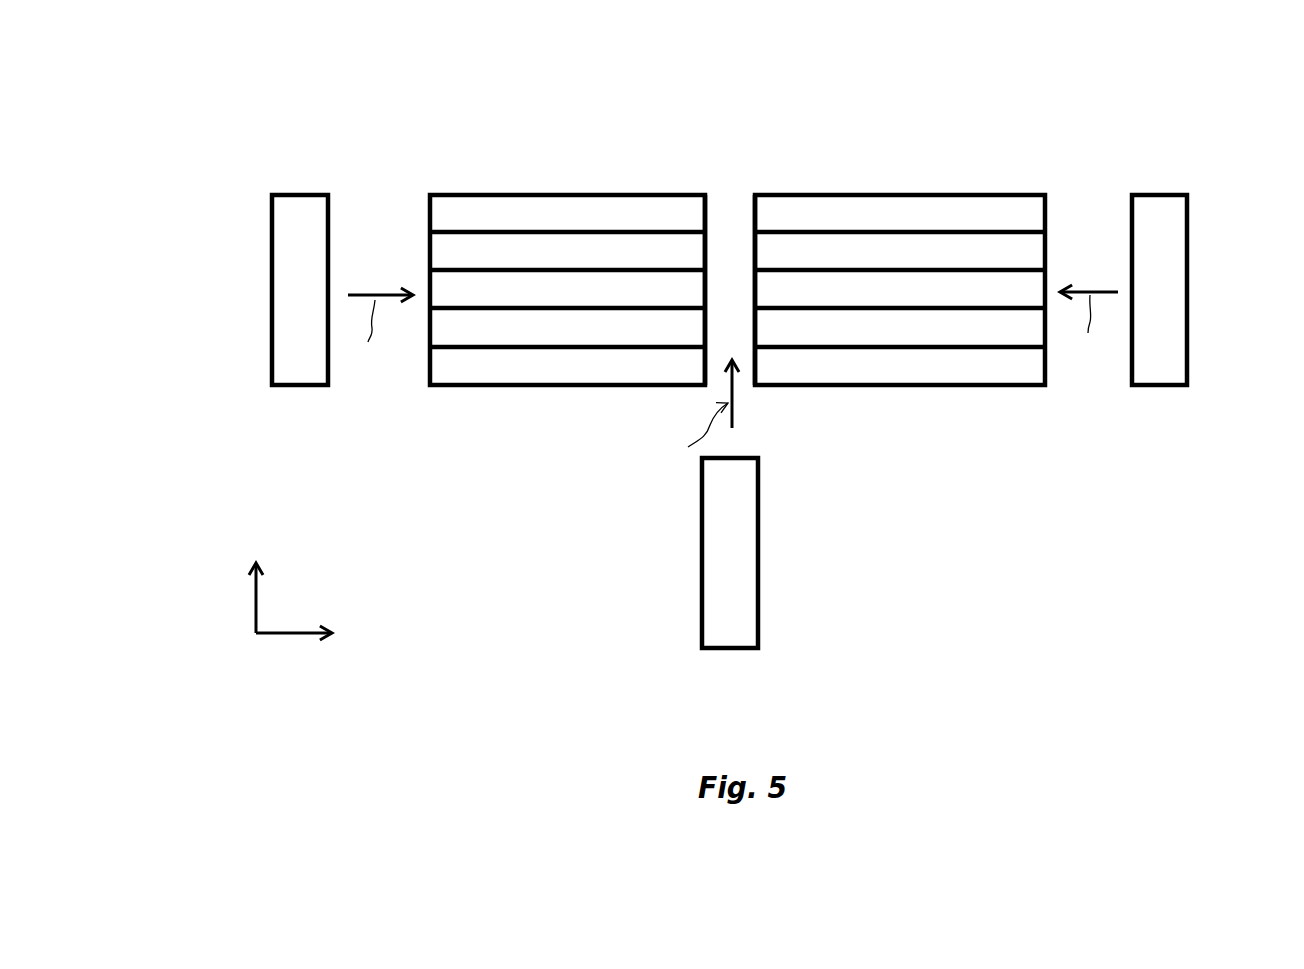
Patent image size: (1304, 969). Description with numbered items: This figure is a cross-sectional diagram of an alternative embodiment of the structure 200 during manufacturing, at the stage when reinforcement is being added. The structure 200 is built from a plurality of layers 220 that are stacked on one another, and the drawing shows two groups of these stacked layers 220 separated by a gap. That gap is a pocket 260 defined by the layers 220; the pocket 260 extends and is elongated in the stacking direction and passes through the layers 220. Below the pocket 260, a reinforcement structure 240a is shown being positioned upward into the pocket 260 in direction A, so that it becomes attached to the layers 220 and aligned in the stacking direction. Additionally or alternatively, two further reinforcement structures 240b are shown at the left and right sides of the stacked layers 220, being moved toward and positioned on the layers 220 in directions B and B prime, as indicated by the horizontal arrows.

The structure 200 is at (758, 41).
The layers 220 is at (925, 195).
The pocket 260 is at (730, 183).
The reinforcement structure 240a is at (701, 552).
The reinforcement structures 240b is at (1183, 445).